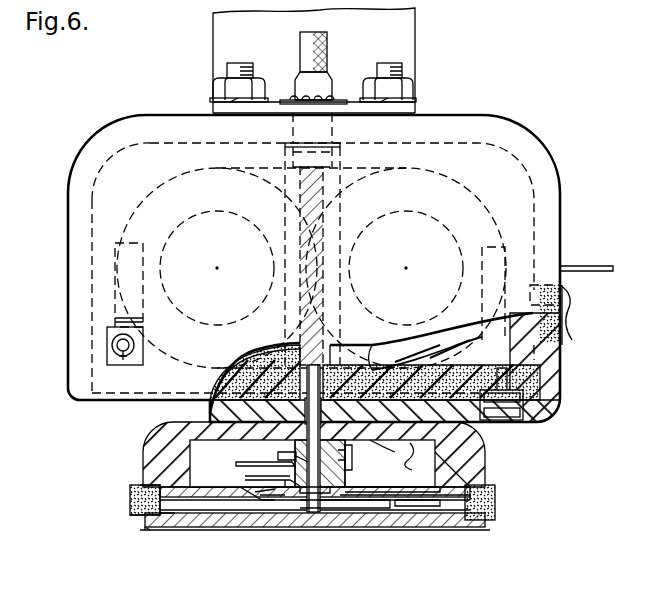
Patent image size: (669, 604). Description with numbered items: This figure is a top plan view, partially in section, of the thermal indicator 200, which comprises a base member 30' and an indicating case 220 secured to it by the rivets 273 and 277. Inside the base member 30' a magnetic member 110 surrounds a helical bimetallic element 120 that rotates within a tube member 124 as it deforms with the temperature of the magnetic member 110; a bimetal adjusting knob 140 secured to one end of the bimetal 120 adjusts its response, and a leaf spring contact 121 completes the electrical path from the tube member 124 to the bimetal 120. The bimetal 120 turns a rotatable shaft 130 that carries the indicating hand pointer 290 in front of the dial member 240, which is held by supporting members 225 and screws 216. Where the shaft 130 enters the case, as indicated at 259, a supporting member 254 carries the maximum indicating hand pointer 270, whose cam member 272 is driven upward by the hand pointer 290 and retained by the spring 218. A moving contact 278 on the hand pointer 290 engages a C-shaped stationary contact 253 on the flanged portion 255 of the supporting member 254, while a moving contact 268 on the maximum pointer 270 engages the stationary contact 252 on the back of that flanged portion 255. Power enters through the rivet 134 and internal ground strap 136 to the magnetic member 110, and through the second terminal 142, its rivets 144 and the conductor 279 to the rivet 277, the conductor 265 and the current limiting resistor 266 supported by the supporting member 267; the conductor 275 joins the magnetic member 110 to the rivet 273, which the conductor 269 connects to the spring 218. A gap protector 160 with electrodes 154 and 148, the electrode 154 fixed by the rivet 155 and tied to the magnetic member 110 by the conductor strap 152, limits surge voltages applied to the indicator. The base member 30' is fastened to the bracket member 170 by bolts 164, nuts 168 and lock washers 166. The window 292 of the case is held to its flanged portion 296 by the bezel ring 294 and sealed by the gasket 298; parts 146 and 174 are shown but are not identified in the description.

The base member 30' is at (294, 268).
The magnetic member 110 is at (208, 205).
The bimetallic element 120 is at (340, 192).
The leaf spring contact 121 is at (295, 181).
The tube member 124 is at (294, 200).
The rotatable shaft 130 is at (312, 513).
The rivet 134 is at (124, 365).
The internal ground strap 136 is at (138, 327).
The bimetal adjusting knob 140 is at (327, 58).
The second terminal 142 is at (605, 268).
The rivets 144 is at (569, 332).
The clamp element 146 is at (523, 399).
The electrode 148 is at (540, 419).
The conductor strap 152 is at (480, 272).
The second electrode 154 is at (510, 378).
The rivet 155 is at (558, 358).
The gap protector 160 is at (577, 450).
The bolts 164 is at (240, 64).
The lock washers 166 is at (213, 100).
The nuts 168 is at (216, 84).
The bracket member 170 is at (403, 26).
The base plate 174 is at (216, 406).
The thermal indicator 200 is at (79, 525).
The screws 216 is at (170, 528).
The spring 218 is at (357, 457).
The indicating case 220 is at (146, 452).
The supporting members 225 is at (162, 439).
The dial member 240 is at (208, 492).
The stationary contact 252 is at (262, 483).
The stationary contact 253 is at (255, 496).
The supporting member 254 is at (290, 489).
The flanged portion 255 is at (372, 500).
The shaft support location 259 is at (322, 494).
The conductor 265 is at (386, 459).
The current limiting resistor 266 is at (418, 464).
The supporting member 267 is at (450, 472).
The moving contact 268 is at (250, 462).
The conductor 269 is at (282, 456).
The maximum indicating hand pointer 270 is at (430, 494).
The cam member 272 is at (410, 508).
The rivet 273 is at (214, 389).
The conductor 275 is at (276, 360).
The rivet 277 is at (432, 354).
The conductor 279 is at (375, 331).
The moving contact 278 is at (262, 502).
The indicating hand pointer 290 is at (346, 514).
The window 292 is at (187, 520).
The bezel ring 294 is at (140, 486).
The flanged portion 296 is at (132, 496).
The gasket 298 is at (140, 514).